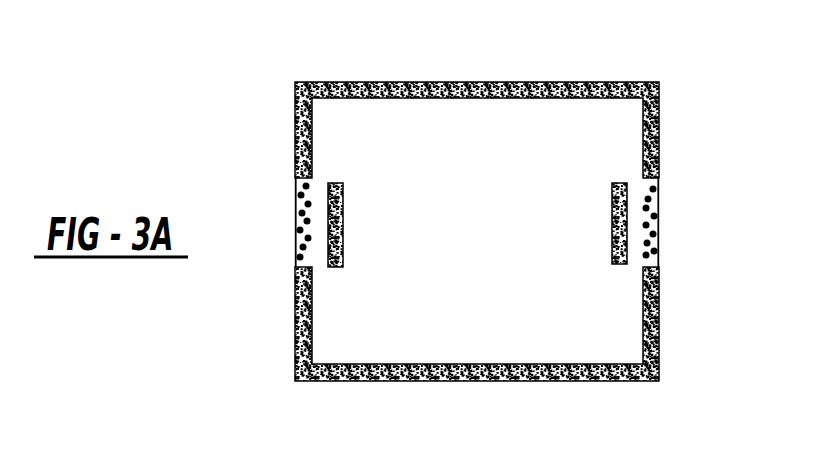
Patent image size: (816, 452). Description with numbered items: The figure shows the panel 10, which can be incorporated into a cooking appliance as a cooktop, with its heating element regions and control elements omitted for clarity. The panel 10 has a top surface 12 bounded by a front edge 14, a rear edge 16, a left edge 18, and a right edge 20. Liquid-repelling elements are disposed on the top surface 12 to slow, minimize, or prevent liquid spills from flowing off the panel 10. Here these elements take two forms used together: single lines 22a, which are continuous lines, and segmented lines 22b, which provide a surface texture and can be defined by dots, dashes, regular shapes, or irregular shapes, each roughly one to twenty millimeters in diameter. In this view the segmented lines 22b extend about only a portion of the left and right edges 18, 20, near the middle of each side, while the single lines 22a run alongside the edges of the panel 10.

The electrode assembly 10 is at (485, 231).
The top wall 12 is at (473, 107).
The bottom wall 14 is at (588, 383).
The housing 16 is at (438, 80).
The left side wall 18 is at (296, 138).
The right side wall 20 is at (660, 163).
The electrodes 22a is at (609, 86).
The openings 22b is at (305, 215).